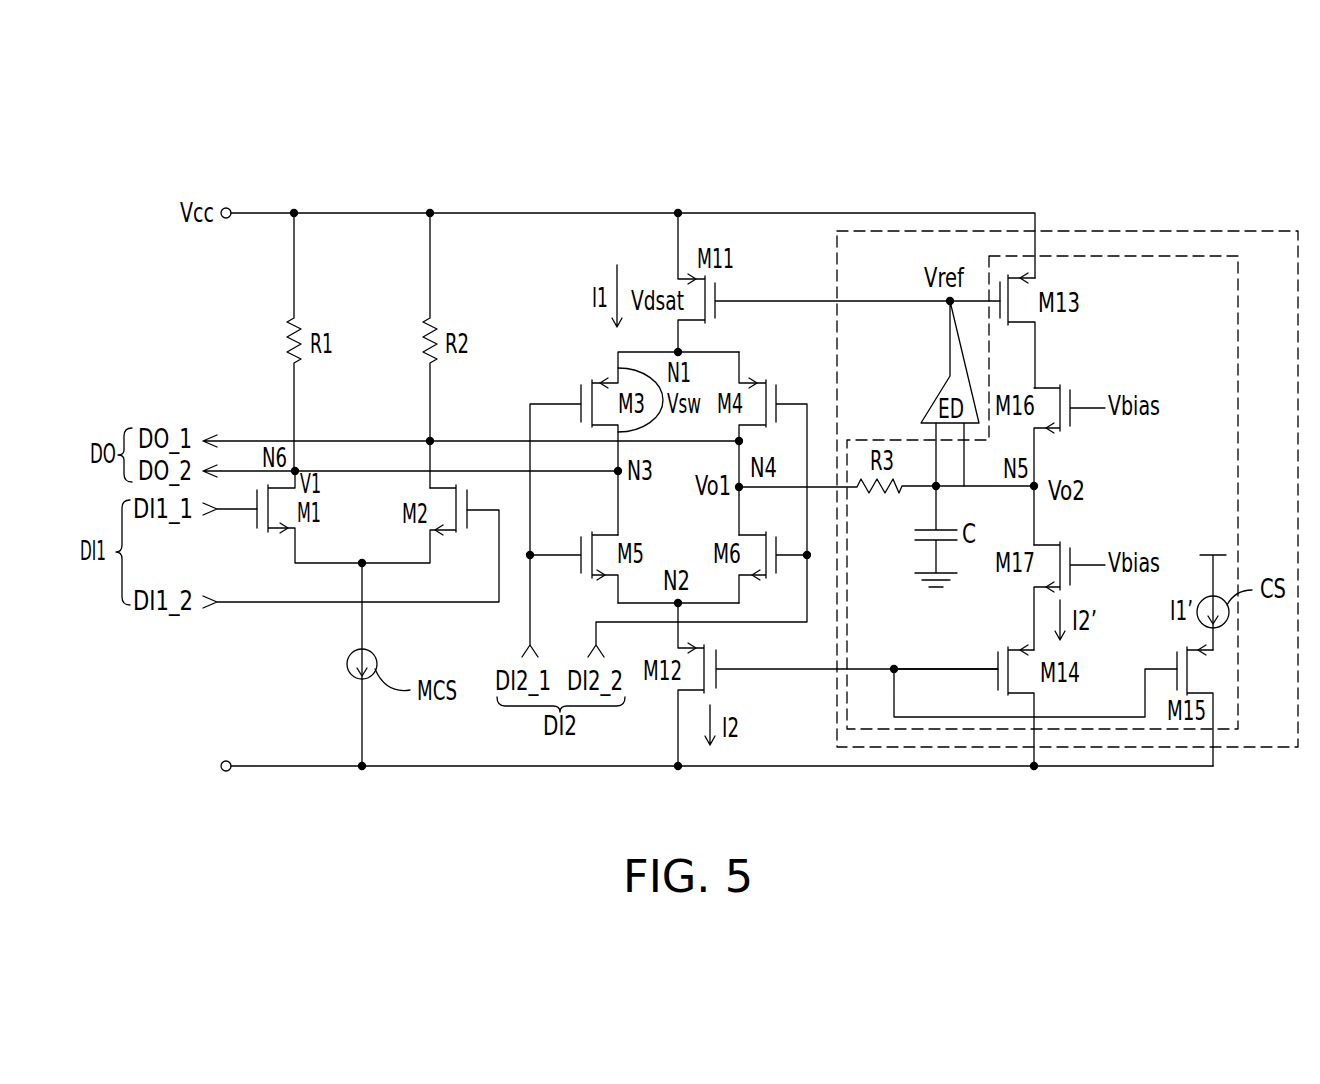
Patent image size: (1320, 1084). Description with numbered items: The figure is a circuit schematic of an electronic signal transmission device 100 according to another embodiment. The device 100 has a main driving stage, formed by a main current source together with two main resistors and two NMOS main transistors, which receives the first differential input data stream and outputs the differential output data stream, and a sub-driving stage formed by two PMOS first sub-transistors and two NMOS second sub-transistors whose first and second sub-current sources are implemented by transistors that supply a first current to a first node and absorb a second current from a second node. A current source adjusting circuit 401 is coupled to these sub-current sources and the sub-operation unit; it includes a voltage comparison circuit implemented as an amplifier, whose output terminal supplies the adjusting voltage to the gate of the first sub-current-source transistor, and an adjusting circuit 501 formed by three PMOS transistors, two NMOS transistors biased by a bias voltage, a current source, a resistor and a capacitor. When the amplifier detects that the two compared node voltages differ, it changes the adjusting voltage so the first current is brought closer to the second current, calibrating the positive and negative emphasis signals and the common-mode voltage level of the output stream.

The electronic signal transmission device 100 is at (1319, 802).
The current source adjusting circuit 401 is at (1272, 231).
The adjusting circuit 501 is at (988, 273).